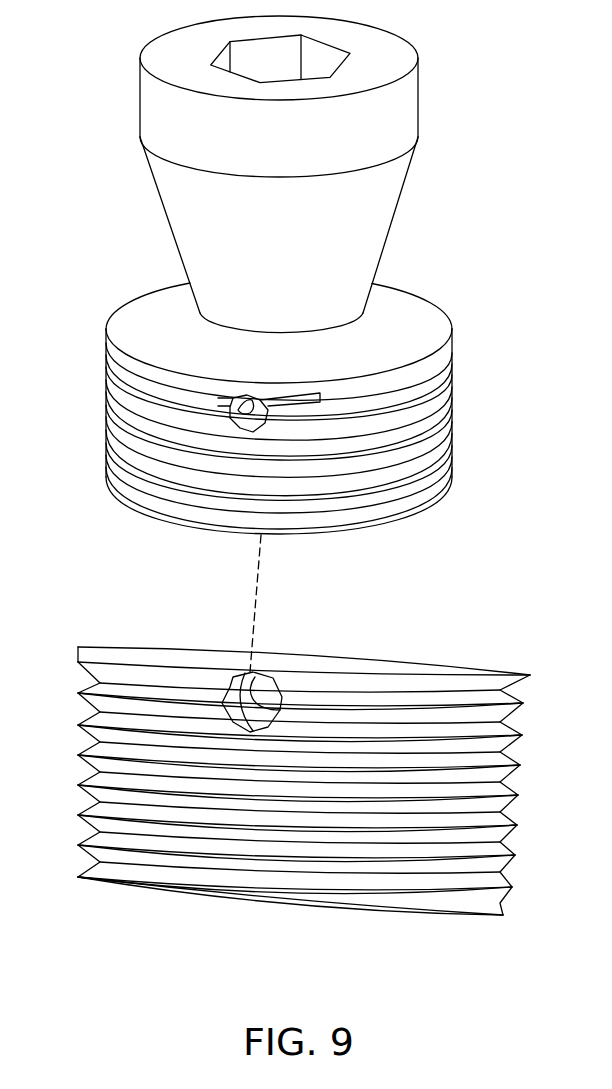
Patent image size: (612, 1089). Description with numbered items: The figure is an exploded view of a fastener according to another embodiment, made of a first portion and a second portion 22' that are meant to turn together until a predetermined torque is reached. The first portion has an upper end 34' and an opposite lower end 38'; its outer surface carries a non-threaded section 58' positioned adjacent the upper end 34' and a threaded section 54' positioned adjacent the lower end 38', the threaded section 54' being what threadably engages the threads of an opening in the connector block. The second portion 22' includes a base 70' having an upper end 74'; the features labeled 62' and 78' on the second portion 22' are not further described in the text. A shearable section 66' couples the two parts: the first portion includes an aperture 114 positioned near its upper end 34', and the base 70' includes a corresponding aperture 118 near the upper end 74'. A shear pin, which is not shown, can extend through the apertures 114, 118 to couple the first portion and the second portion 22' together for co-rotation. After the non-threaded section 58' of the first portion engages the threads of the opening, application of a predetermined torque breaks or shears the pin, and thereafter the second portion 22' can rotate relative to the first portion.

The drive head of plug 62' is at (312, 174).
The upper end 74' is at (314, 331).
The base 70' is at (311, 429).
The lower end of plug 78' is at (279, 528).
The aperture 118 is at (247, 399).
The shearable section 66' is at (144, 525).
The aperture 114 is at (260, 684).
The upper end 34' is at (304, 632).
The non-threaded section 58' is at (48, 649).
The threaded section 54' is at (63, 769).
The second portion 22' is at (331, 795).
The lower end 38' is at (290, 924).